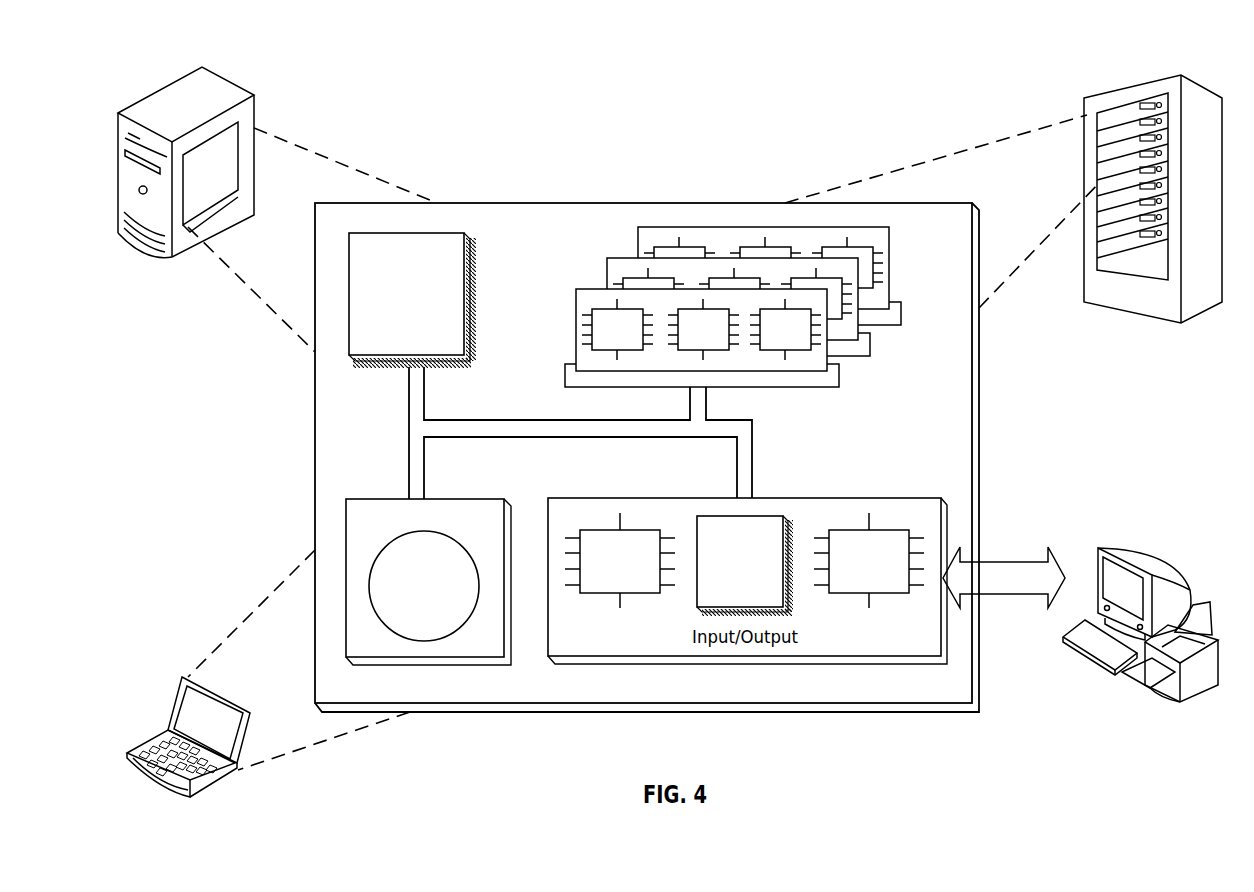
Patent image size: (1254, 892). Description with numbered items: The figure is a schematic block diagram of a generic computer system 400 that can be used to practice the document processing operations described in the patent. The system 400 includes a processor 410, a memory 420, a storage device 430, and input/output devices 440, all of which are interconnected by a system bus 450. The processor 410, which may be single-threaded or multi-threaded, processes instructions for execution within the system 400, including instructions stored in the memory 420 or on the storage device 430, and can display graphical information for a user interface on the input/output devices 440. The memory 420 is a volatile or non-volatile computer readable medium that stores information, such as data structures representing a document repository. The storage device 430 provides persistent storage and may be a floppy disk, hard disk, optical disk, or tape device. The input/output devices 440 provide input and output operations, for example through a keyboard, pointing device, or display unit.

The generic computer system 400 is at (485, 92).
The processor 410 is at (457, 349).
The memory 420 is at (897, 353).
The storage device 430 is at (496, 650).
The input/output devices 440 is at (1097, 553).
The system bus 450 is at (580, 437).